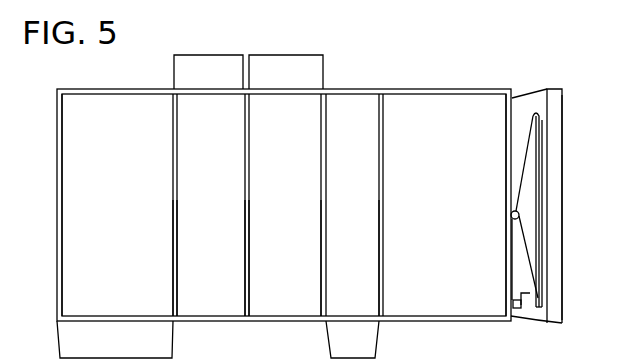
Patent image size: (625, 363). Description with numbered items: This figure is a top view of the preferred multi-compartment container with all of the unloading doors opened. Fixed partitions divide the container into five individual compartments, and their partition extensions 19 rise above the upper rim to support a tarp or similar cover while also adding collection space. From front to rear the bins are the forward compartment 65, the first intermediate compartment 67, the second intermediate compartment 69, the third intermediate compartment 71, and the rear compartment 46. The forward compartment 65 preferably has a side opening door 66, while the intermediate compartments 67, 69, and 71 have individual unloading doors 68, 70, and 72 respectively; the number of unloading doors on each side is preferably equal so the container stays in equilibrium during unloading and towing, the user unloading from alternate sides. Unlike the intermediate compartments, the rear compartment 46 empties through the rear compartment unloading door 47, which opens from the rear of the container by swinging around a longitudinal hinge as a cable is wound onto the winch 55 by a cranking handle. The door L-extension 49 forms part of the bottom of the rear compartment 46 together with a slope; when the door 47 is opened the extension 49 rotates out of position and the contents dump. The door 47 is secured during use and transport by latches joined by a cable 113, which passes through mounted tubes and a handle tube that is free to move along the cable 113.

The partition extensions 19 is at (245, 293).
The rear compartment 46 is at (459, 216).
The rear compartment unloading door 47 is at (521, 100).
The door L-extension 49 is at (556, 145).
The winch 55 is at (524, 318).
The forward compartment 65 is at (101, 254).
The side opening door 66 is at (124, 349).
The first intermediate compartment 67 is at (224, 243).
The unloading door 68 is at (222, 81).
The second intermediate compartment 69 is at (297, 233).
The unloading door 70 is at (297, 81).
The third intermediate compartment 71 is at (364, 223).
The unloading door 72 is at (367, 349).
The cable 113 is at (540, 190).